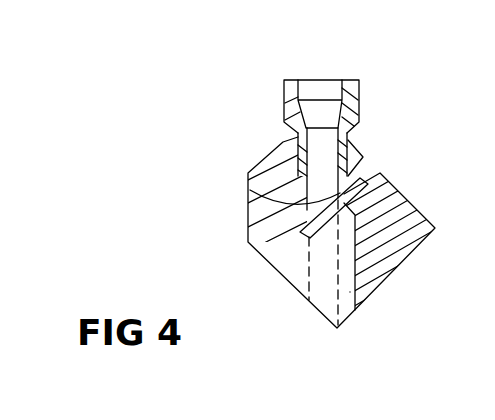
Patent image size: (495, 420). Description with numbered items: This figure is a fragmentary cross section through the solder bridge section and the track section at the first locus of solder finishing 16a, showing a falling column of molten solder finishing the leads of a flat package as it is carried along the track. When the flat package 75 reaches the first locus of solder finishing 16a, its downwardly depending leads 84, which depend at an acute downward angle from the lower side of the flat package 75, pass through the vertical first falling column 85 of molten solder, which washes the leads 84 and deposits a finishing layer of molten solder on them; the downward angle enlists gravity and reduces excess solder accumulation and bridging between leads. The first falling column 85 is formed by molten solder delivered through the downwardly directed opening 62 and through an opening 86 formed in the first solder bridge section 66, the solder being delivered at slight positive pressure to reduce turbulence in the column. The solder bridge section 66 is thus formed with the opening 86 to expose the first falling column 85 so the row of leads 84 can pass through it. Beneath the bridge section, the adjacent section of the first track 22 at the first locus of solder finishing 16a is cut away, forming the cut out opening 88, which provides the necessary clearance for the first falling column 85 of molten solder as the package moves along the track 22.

The downwardly directed opening 62 is at (331, 70).
The first locus of solder finishing 16a is at (392, 103).
The first solder bridge section 66 is at (270, 153).
The first track 22 is at (420, 214).
The opening 86 is at (290, 236).
The downwardly depending leads 84 is at (253, 203).
The flat package 75 is at (360, 192).
The first falling column of molten solder 85 is at (307, 268).
The cut out opening 88 is at (350, 292).